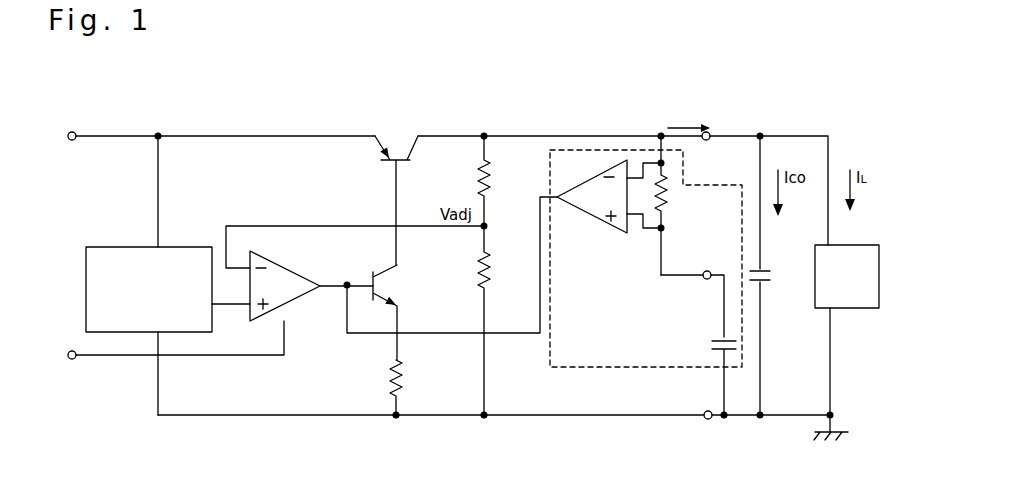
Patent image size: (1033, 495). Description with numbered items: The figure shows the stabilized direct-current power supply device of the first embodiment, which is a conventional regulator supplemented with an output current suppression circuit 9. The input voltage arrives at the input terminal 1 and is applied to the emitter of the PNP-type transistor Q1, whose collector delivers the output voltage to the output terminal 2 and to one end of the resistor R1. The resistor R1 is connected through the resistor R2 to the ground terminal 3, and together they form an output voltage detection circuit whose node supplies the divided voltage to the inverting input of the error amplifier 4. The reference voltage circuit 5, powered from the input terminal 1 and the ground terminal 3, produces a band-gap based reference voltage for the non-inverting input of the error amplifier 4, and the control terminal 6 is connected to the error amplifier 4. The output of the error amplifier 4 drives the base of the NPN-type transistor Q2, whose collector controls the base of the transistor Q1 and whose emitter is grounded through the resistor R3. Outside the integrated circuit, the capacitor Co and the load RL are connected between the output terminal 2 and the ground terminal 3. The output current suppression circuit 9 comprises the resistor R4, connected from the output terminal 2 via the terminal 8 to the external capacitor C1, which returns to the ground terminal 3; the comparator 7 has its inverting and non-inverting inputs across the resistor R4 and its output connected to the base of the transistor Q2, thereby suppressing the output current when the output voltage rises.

The input terminal 1 is at (72, 133).
The output terminal 2 is at (708, 143).
The ground terminal 3 is at (710, 421).
The error amplifier 4 is at (292, 266).
The reference voltage circuit 5 is at (196, 245).
The control terminal 6 is at (76, 351).
The comparator 7 is at (592, 216).
The terminal 8 is at (709, 280).
The output current suppression circuit 9 is at (632, 370).
The PNP-type transistor Q1 is at (396, 133).
The NPN-type transistor Q2 is at (404, 281).
The resistor R1 is at (492, 188).
The resistor R2 is at (492, 276).
The resistor R3 is at (414, 366).
The resistor R4 is at (670, 198).
The capacitor C1 is at (706, 347).
The capacitor Co is at (780, 268).
The load RL is at (868, 248).